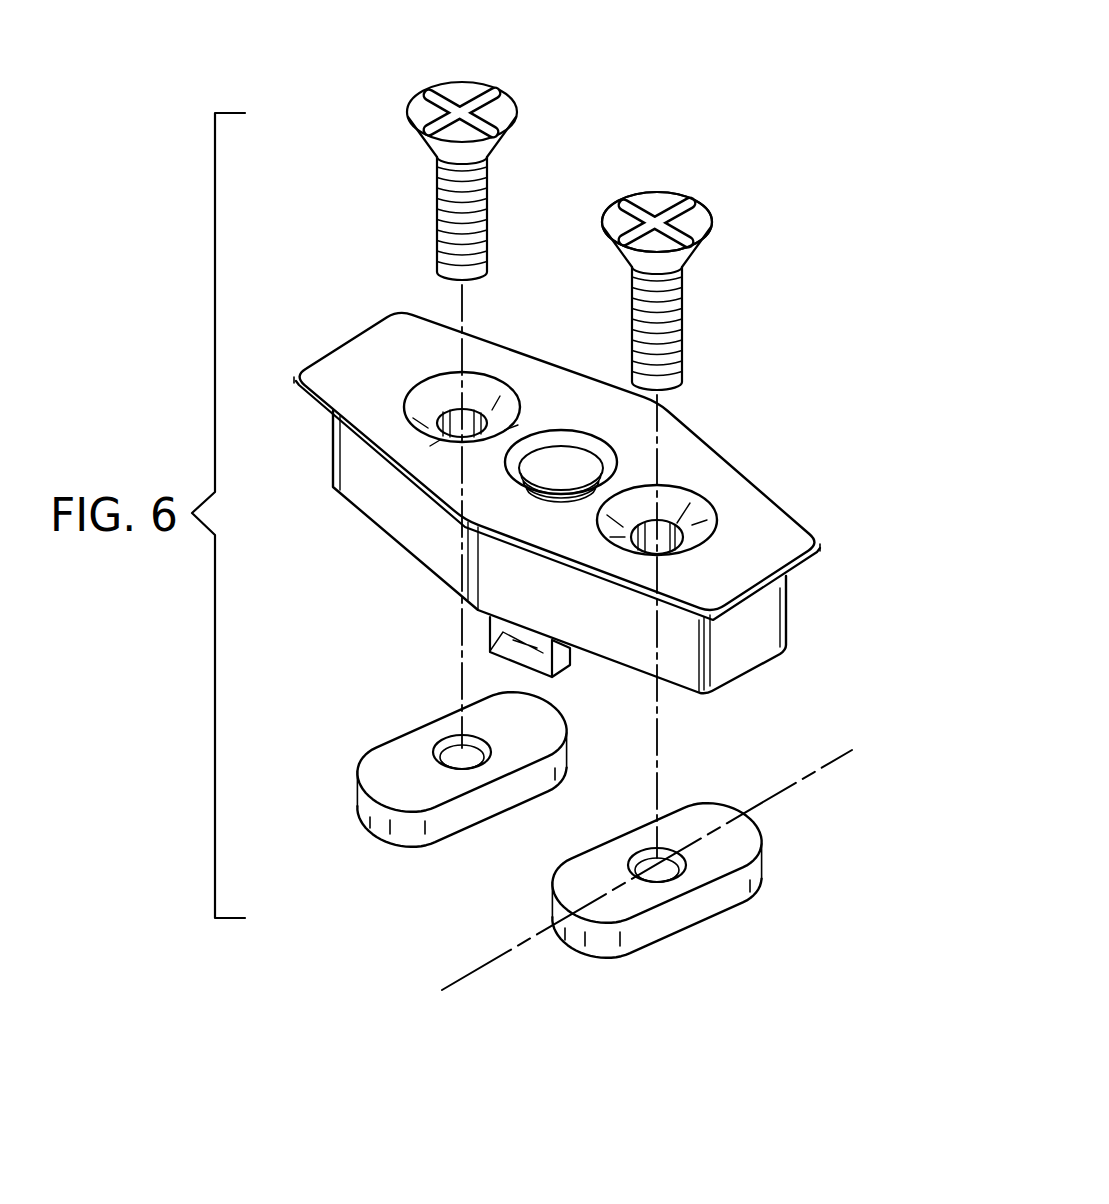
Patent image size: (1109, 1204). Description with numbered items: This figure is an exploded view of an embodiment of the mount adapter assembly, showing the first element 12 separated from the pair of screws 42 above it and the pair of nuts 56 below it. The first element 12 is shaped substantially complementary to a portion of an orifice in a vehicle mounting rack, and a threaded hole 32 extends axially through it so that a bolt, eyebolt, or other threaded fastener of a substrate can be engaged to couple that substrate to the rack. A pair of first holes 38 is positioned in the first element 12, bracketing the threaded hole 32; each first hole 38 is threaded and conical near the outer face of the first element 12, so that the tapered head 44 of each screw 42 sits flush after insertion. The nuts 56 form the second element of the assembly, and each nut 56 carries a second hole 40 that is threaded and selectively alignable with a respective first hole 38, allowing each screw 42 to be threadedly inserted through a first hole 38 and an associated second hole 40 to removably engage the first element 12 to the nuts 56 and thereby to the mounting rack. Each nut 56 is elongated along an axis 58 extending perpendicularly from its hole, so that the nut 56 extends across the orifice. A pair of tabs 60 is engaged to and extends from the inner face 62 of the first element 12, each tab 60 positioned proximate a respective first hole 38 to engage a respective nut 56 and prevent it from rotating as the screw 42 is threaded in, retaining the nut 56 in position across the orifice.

The first element 12 is at (778, 546).
The threaded hole 32 is at (550, 476).
The first holes 38 is at (483, 421).
The second holes 40 is at (648, 855).
The screws 42 is at (637, 307).
The head 44 is at (697, 224).
The nuts 56 is at (553, 897).
The axis 58 is at (803, 780).
The tabs 60 is at (491, 647).
The inner face 62 is at (723, 690).